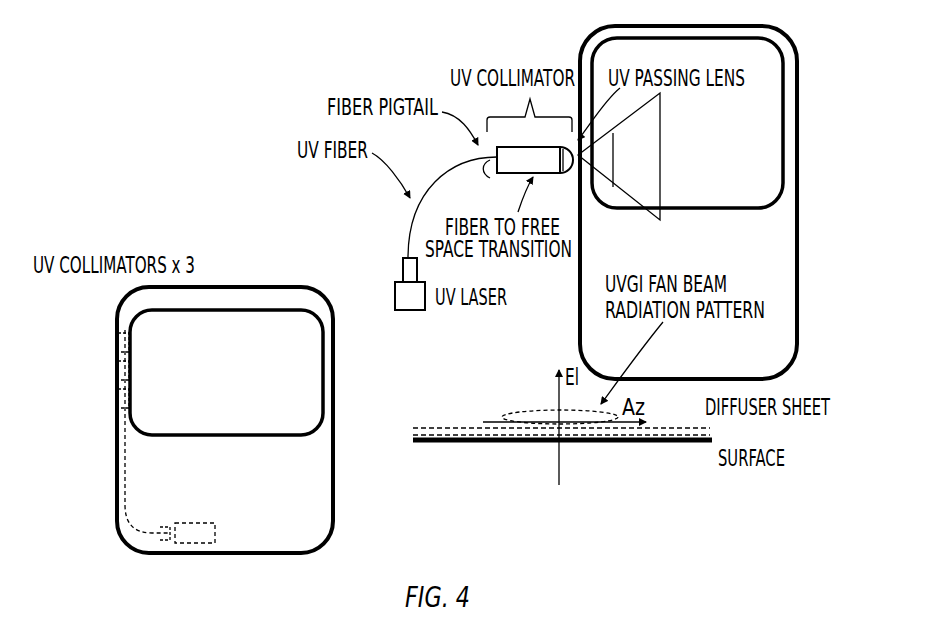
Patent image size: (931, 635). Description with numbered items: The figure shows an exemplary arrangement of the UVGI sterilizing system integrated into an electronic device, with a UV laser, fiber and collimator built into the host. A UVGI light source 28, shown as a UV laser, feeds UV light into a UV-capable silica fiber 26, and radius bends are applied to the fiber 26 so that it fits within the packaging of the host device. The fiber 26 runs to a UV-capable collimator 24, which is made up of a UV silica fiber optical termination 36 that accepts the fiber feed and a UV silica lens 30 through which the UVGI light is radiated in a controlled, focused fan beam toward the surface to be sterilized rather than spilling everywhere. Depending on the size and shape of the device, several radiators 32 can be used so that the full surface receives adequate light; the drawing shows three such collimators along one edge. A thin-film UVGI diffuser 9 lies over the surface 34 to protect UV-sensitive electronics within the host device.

The housing / surface 34 is at (212, 356).
The radiators 32 is at (130, 338).
The fiber 26 is at (125, 508).
The UVGI light source 28 is at (165, 535).
The collimator 24 is at (545, 144).
The UV silica fiber optical termination 36 is at (494, 183).
The lens 30 is at (571, 174).
The UVGI diffuser 9 is at (712, 433).